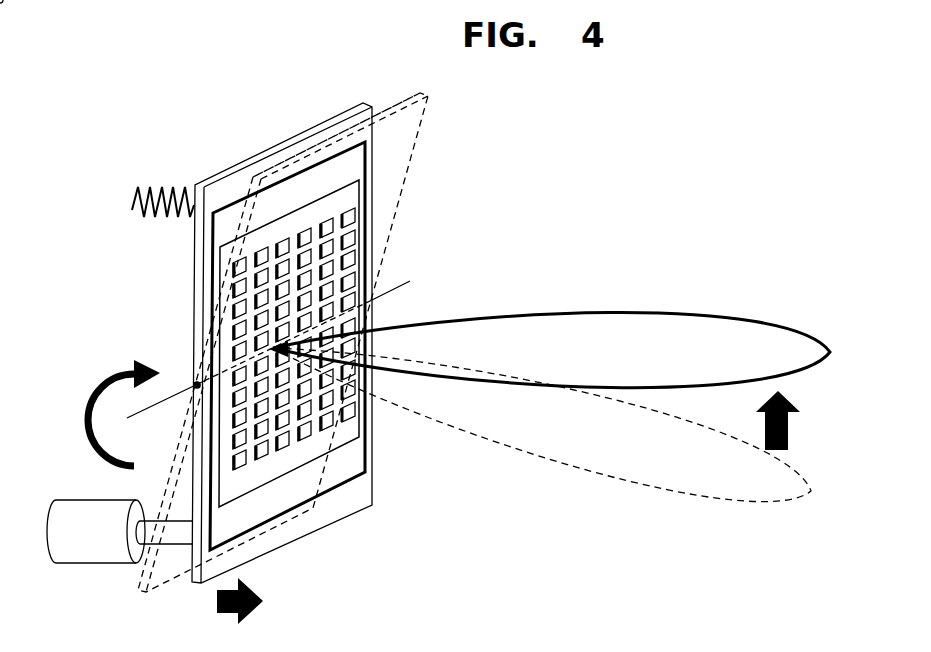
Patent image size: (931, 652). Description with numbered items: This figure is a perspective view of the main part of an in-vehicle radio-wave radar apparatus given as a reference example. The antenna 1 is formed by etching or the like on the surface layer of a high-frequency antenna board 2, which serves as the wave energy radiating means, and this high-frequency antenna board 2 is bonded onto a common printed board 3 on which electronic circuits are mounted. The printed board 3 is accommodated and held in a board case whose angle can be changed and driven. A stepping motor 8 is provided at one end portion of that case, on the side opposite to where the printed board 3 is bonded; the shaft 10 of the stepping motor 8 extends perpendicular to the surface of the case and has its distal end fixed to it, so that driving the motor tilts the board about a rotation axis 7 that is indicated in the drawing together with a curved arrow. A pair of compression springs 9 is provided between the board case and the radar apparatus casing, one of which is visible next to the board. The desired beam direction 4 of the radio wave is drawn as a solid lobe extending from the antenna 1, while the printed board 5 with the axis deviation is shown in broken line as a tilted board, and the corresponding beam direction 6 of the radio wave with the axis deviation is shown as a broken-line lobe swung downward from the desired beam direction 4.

The antenna 1 is at (343, 420).
The high-frequency antenna board 2 is at (328, 493).
The printed board 3 is at (337, 132).
The beam direction 4 is at (700, 312).
The printed board with axis deviation 5 is at (403, 146).
The beam direction with axis deviation 6 is at (685, 507).
The rotation axis 7 is at (192, 382).
The stepping motor 8 is at (92, 565).
The compression spring 9 is at (167, 184).
The shaft 10 is at (172, 538).